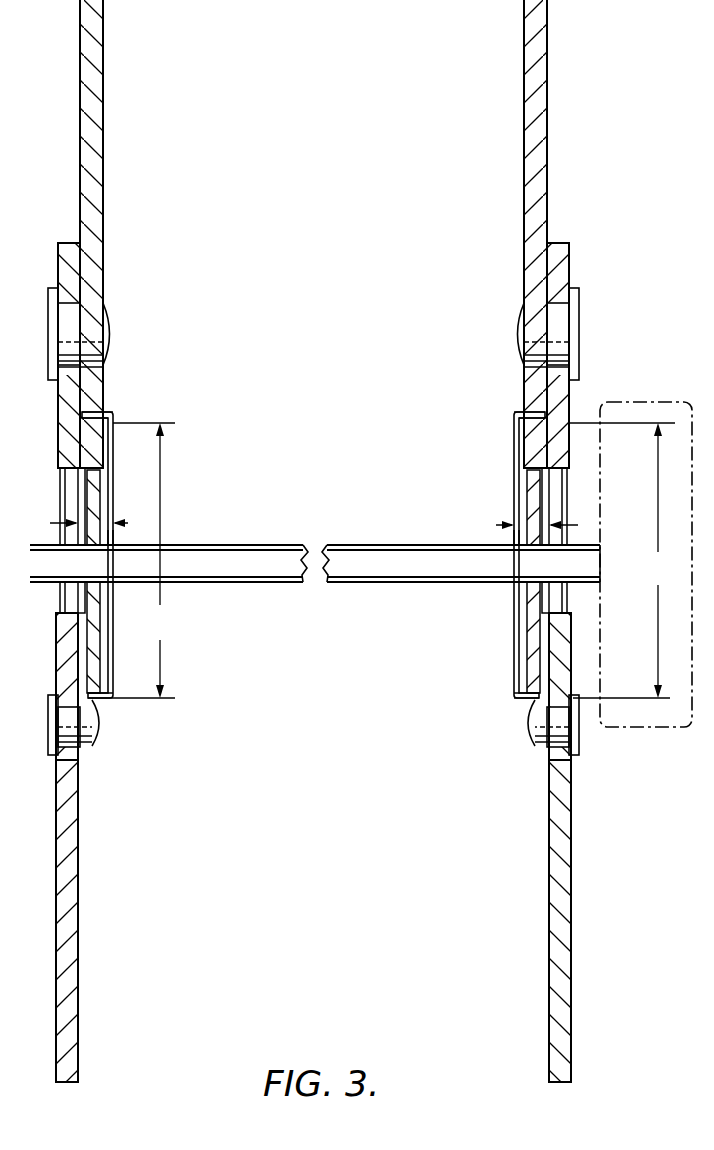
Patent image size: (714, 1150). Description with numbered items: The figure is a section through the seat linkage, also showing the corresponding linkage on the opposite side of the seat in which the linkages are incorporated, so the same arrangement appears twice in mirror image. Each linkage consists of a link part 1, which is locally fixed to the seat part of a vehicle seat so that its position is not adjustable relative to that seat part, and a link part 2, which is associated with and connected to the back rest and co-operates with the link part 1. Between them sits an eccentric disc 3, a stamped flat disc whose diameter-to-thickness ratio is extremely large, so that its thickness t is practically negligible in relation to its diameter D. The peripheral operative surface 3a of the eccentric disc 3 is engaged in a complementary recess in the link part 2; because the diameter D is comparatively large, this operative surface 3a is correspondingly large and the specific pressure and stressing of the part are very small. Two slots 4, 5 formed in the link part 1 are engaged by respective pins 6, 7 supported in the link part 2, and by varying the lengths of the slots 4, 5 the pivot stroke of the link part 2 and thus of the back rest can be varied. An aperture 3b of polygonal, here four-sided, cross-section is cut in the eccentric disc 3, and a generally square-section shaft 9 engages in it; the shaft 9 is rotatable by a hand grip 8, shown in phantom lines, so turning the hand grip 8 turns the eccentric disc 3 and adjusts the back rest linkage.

The link part 1 is at (70, 903).
The link part 2 is at (93, 106).
The eccentric disc 3 is at (95, 490).
The peripheral operative surface 3a is at (95, 413).
The aperture 3b is at (113, 536).
The slot 4 is at (73, 382).
The slot 5 is at (66, 764).
The pin 6 is at (93, 325).
The pin 7 is at (90, 727).
The hand grip 8 is at (672, 727).
The square-section shaft 9 is at (370, 560).
The diameter D is at (394, 560).
The thickness t is at (314, 519).